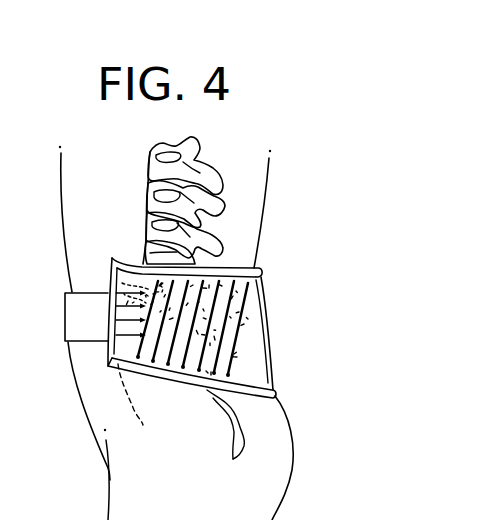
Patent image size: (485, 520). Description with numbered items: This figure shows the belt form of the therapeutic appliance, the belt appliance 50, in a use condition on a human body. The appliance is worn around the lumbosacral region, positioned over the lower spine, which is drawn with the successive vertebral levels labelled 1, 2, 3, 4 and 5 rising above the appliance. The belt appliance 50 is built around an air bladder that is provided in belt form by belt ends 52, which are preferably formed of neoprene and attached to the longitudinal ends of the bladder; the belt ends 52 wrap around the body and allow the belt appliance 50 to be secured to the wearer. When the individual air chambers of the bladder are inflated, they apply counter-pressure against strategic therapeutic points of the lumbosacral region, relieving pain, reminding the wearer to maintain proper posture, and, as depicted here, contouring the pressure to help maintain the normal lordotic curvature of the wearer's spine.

The first lumbar vertebra 1 is at (149, 162).
The second lumbar vertebra 2 is at (158, 193).
The third lumbar vertebra 3 is at (150, 231).
The fourth lumbar vertebra 4 is at (150, 258).
The fifth lumbar vertebra / brace frame edge 5 is at (108, 275).
The belt appliance 50 is at (196, 328).
The belt ends 52 is at (73, 331).